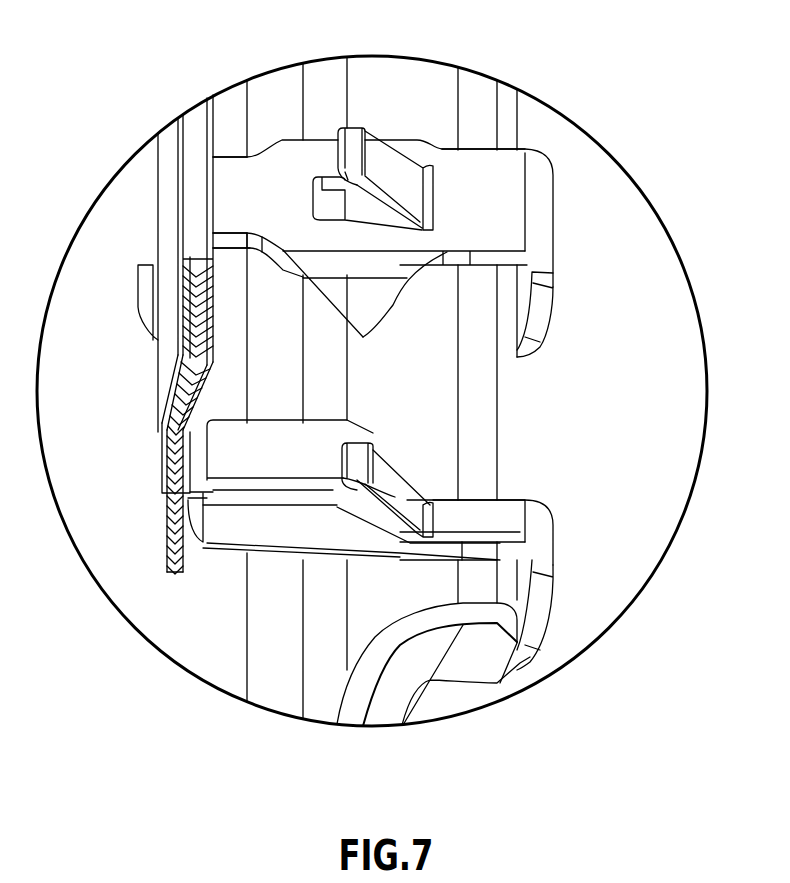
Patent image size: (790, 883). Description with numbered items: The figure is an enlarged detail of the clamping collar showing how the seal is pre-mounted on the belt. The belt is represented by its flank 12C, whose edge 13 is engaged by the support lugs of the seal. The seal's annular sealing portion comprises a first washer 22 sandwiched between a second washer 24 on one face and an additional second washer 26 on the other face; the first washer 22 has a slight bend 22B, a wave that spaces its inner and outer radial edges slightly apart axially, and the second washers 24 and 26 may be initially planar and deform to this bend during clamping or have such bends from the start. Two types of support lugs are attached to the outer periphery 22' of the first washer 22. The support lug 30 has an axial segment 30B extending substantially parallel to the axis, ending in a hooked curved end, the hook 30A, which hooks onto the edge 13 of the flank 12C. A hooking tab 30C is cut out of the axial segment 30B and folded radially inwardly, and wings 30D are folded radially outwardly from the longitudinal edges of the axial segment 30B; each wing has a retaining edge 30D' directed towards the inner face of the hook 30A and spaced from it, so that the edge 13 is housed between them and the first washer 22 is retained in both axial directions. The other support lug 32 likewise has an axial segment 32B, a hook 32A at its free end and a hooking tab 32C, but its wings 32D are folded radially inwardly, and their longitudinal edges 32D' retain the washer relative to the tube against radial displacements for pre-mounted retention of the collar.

The flank 12C is at (528, 430).
The edge 13 is at (517, 370).
The first washer 22 is at (142, 230).
The slight bend 22B is at (183, 390).
The outer periphery 22' is at (153, 582).
The second washer 24 is at (187, 470).
The additional second washer 26 is at (165, 448).
The support lug 30 is at (585, 203).
The hook 30A is at (540, 317).
The axial segment 30B is at (473, 167).
The hooking tab 30C is at (355, 137).
The wing 30D is at (439, 330).
The retaining edge 30D' is at (510, 294).
The support lug 32 is at (586, 529).
The hook 32A is at (543, 612).
The axial segment 32B is at (480, 513).
The hooking tab 32C is at (360, 457).
The wing 32D is at (348, 629).
The longitudinal edge 32D' is at (171, 588).